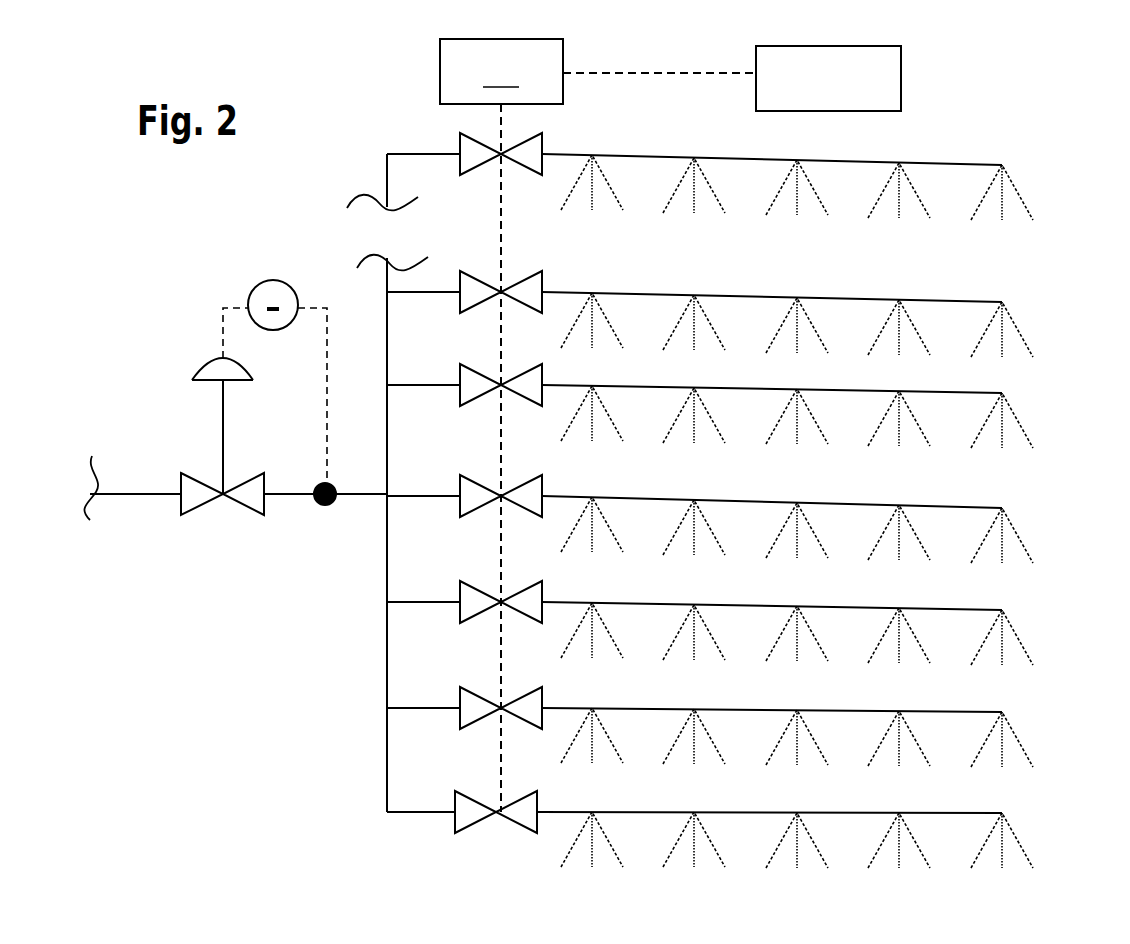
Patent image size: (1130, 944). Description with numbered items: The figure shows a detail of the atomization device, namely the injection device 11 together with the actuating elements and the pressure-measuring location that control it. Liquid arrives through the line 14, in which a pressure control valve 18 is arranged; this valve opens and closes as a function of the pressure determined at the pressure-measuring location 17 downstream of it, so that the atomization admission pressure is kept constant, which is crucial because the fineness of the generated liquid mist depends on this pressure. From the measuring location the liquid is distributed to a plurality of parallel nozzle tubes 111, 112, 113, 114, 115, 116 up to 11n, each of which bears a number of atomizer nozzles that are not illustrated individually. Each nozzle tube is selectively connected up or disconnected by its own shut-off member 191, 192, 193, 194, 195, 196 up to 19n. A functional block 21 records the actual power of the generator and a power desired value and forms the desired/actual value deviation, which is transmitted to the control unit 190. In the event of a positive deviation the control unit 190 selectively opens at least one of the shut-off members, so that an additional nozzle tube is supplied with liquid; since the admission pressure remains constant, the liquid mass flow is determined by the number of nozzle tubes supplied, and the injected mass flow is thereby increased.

The line 14 is at (120, 494).
The pressure control valve 18 is at (233, 505).
The pressure-measuring location 17 is at (320, 508).
The shut-off member 19n is at (462, 172).
The shut-off member 196 is at (460, 300).
The shut-off member 195 is at (460, 393).
The shut-off member 194 is at (460, 510).
The shut-off member 193 is at (457, 612).
The shut-off member 192 is at (450, 718).
The shut-off member 191 is at (460, 820).
The control unit 190 is at (501, 71).
The functional block 21 is at (901, 80).
The nozzle tube 11n is at (1002, 165).
The nozzle tube 116 is at (992, 295).
The injection device 11 is at (940, 373).
The nozzle tube 115 is at (847, 472).
The nozzle tube 114 is at (1002, 508).
The nozzle tube 113 is at (1002, 610).
The nozzle tube 112 is at (1002, 712).
The nozzle tube 111 is at (1002, 813).